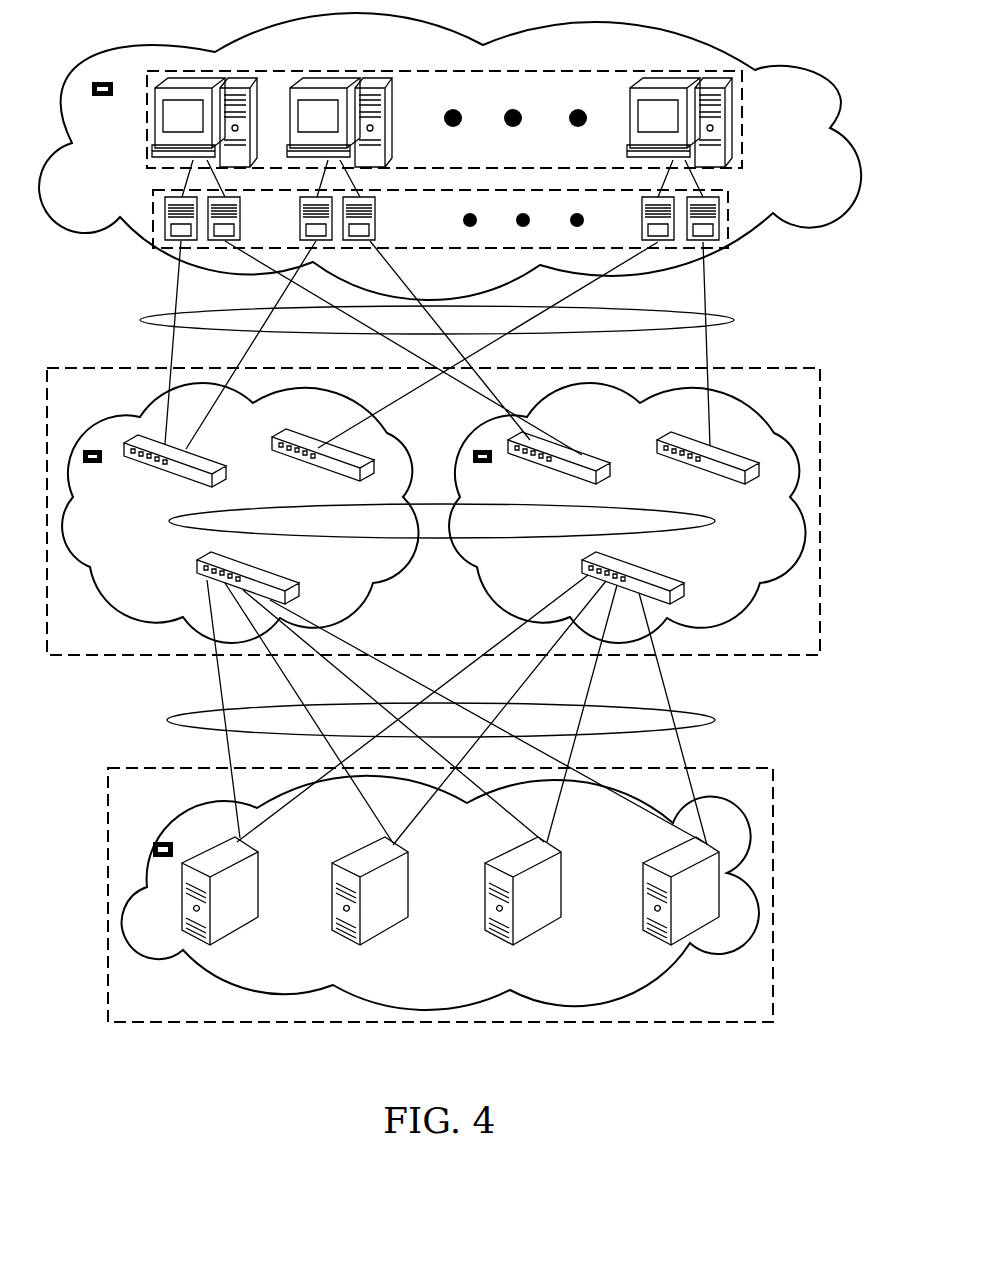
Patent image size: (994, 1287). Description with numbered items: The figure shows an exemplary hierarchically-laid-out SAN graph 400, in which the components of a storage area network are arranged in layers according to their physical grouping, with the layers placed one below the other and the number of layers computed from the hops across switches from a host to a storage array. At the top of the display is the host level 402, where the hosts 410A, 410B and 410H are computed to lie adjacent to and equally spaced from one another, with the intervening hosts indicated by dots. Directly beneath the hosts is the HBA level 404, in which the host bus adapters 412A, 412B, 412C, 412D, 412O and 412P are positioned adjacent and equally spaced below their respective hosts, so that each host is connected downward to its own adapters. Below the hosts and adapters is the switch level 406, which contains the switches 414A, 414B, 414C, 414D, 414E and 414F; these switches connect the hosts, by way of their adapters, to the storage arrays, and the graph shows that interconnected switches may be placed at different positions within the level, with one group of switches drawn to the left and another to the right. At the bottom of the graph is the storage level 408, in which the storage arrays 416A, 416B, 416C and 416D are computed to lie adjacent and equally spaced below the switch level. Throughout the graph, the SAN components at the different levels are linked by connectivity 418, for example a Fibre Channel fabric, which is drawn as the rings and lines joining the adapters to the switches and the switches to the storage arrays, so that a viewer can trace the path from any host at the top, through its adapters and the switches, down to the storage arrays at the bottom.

The hierarchically-laid-out SAN graph 400 is at (608, 1032).
The host level 402 is at (520, 71).
The HBA level 404 is at (728, 190).
The switch level 406 is at (680, 655).
The storage level 408 is at (437, 1023).
The host 410A is at (152, 126).
The host 410B is at (395, 128).
The host 410H is at (735, 123).
The HBA 412A is at (160, 208).
The HBA 412B is at (241, 218).
The HBA 412C is at (300, 213).
The HBA 412D is at (376, 218).
The HBA 412O is at (642, 212).
The HBA 412P is at (726, 220).
The switch 414A is at (190, 479).
The switch 414B is at (287, 436).
The switch 414C is at (258, 577).
The switch 414D is at (590, 460).
The switch 414E is at (731, 465).
The switch 414F is at (647, 577).
The storage array 416A is at (220, 932).
The storage array 416B is at (363, 852).
The storage array 416C is at (518, 852).
The storage array 416D is at (668, 852).
The connectivity 418 is at (713, 331).